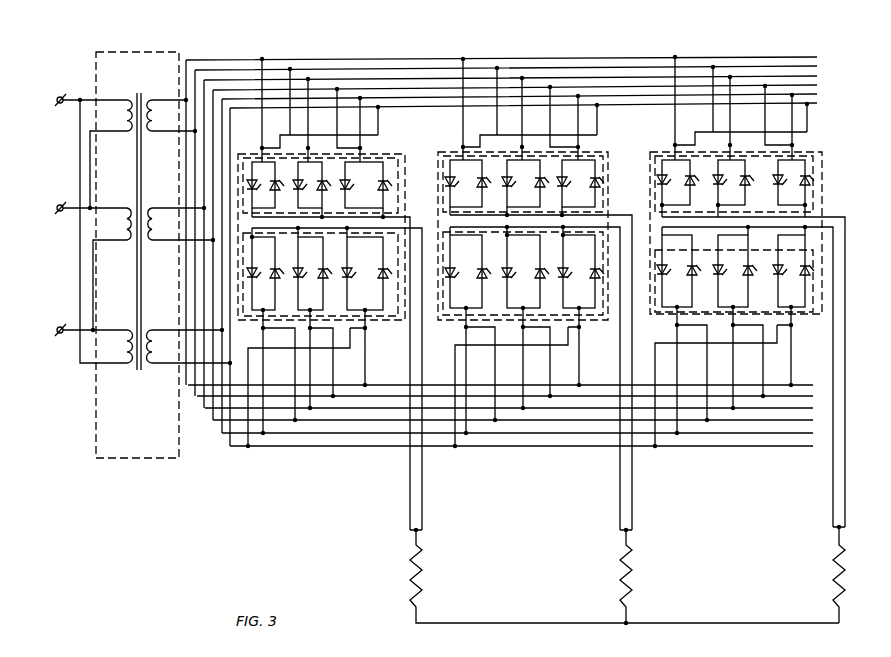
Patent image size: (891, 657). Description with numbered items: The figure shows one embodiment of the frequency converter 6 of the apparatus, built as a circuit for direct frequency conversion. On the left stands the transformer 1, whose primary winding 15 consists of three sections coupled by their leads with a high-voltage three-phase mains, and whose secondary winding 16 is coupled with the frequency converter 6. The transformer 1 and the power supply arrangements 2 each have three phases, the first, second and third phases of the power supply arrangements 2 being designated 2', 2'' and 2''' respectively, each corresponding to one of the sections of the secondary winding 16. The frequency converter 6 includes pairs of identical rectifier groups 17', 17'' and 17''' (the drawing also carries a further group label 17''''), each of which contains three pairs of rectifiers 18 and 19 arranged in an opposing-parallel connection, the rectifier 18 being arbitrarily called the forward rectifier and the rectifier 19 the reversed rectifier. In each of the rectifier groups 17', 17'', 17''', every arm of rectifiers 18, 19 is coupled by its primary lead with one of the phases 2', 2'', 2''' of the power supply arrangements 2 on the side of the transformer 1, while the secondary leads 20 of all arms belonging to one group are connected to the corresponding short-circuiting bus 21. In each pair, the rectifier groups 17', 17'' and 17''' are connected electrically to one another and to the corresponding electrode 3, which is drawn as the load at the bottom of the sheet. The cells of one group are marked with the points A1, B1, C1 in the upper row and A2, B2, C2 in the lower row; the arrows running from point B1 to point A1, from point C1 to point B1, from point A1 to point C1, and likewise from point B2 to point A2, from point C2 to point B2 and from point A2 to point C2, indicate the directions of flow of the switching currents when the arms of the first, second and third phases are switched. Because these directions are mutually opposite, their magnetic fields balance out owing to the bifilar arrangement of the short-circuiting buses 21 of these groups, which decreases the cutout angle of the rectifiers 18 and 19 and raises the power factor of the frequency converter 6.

The transformer 1 is at (100, 425).
The primary winding 15 is at (125, 97).
The secondary winding 16 is at (170, 366).
The power supply arrangements 2 is at (510, 248).
The first phase of the power supply arrangements 2' is at (501, 250).
The second phase of the power supply arrangements 2'' is at (506, 250).
The third phase of the power supply arrangements 2''' is at (510, 250).
The electrode 3 is at (423, 575).
The frequency converter 6 is at (407, 326).
The rectifier group 17' is at (727, 251).
The rectifier group 17'' is at (519, 252).
The rectifier group 17''' is at (314, 337).
The converter module 17'''' is at (326, 138).
The forward rectifier 18 is at (252, 176).
The reversed rectifier 19 is at (277, 188).
The secondary lead 20 is at (383, 200).
The short-circuiting bus 21 is at (408, 222).
The switching current arrow point A1 is at (676, 182).
The switching current arrow point B1 is at (731, 182).
The switching current arrow point C1 is at (791, 182).
The switching current arrow point A2 is at (791, 271).
The switching current arrow point B2 is at (733, 271).
The switching current arrow point C2 is at (677, 271).